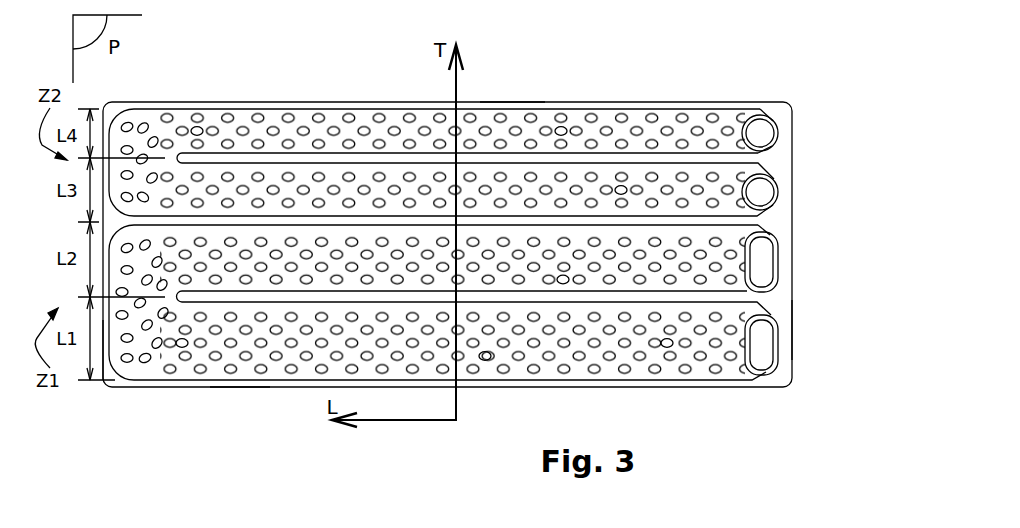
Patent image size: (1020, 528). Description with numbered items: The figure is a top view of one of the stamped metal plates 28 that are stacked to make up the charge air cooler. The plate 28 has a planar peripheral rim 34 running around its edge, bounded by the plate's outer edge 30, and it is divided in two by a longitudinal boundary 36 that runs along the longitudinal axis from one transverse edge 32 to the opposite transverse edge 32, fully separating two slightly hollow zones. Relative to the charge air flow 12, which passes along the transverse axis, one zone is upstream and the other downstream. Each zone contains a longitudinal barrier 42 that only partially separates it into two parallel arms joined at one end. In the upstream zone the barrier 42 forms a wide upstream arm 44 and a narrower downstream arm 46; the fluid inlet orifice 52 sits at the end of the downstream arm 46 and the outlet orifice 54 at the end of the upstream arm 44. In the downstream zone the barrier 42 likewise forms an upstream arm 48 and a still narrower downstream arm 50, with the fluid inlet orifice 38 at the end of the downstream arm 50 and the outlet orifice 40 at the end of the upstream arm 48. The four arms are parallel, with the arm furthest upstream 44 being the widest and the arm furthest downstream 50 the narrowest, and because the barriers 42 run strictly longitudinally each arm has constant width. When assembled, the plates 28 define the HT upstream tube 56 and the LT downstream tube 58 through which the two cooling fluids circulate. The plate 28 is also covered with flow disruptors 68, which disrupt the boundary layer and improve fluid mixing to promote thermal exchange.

The charge air flow 12 is at (455, 84).
The plate 28 is at (768, 82).
The peripheral edge 30 is at (513, 101).
The transverse edge 32 is at (102, 352).
The planar peripheral rim 34 is at (305, 107).
The longitudinal boundary 36 is at (275, 218).
The fluid inlet orifice 38 is at (760, 132).
The outlet orifice 40 is at (758, 194).
The longitudinal barrier 42 is at (330, 157).
The upstream arm 44 is at (667, 347).
The downstream arm 46 is at (561, 280).
The upstream arm 48 is at (622, 190).
The downstream arm 50 is at (561, 130).
The fluid inlet orifice 52 is at (762, 265).
The outlet orifice 54 is at (760, 345).
The HT upstream tube 56 is at (180, 345).
The LT downstream tube 58 is at (198, 130).
The flow disruptor 68 is at (485, 358).